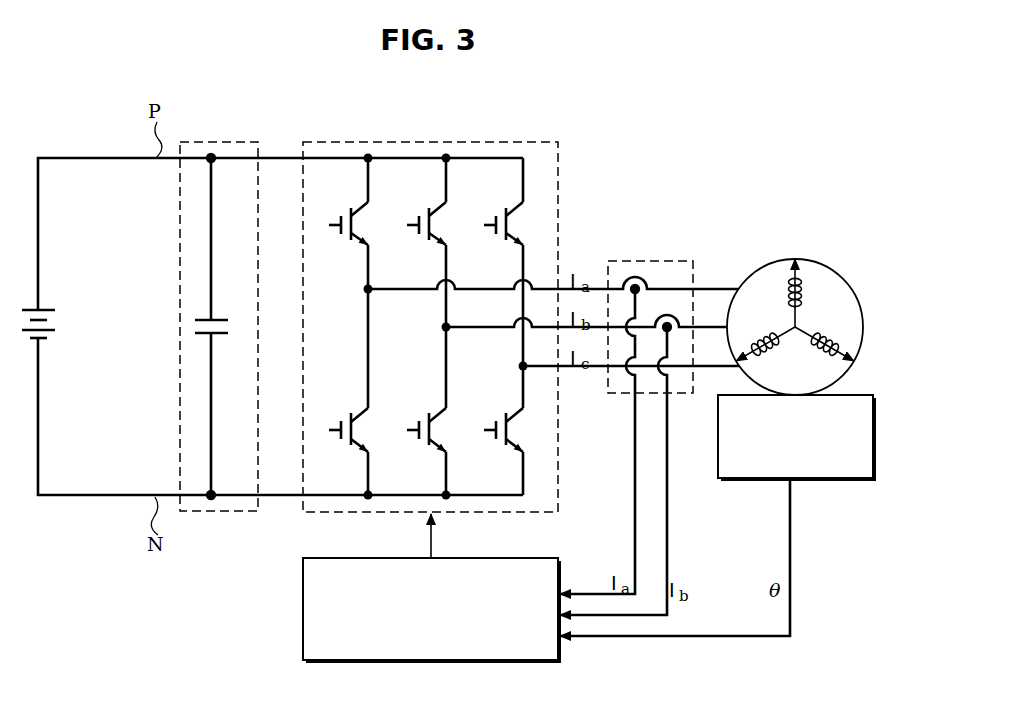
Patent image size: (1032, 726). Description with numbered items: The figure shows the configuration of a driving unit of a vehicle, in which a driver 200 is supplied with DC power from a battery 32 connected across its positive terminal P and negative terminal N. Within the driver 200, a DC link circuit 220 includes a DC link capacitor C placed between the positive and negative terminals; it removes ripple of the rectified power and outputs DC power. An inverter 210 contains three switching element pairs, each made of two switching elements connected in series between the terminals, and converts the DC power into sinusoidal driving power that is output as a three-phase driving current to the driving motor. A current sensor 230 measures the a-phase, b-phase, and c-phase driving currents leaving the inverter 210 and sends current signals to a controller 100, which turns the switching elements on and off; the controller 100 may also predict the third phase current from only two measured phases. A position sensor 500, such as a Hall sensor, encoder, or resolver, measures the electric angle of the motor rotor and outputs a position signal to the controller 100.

The battery 32 is at (57, 322).
The DC link circuit 220 is at (216, 142).
The inverter 210 is at (428, 142).
The current sensor 230 is at (644, 261).
The driver 200 is at (752, 160).
The position sensor 500 is at (875, 425).
The controller 100 is at (527, 558).